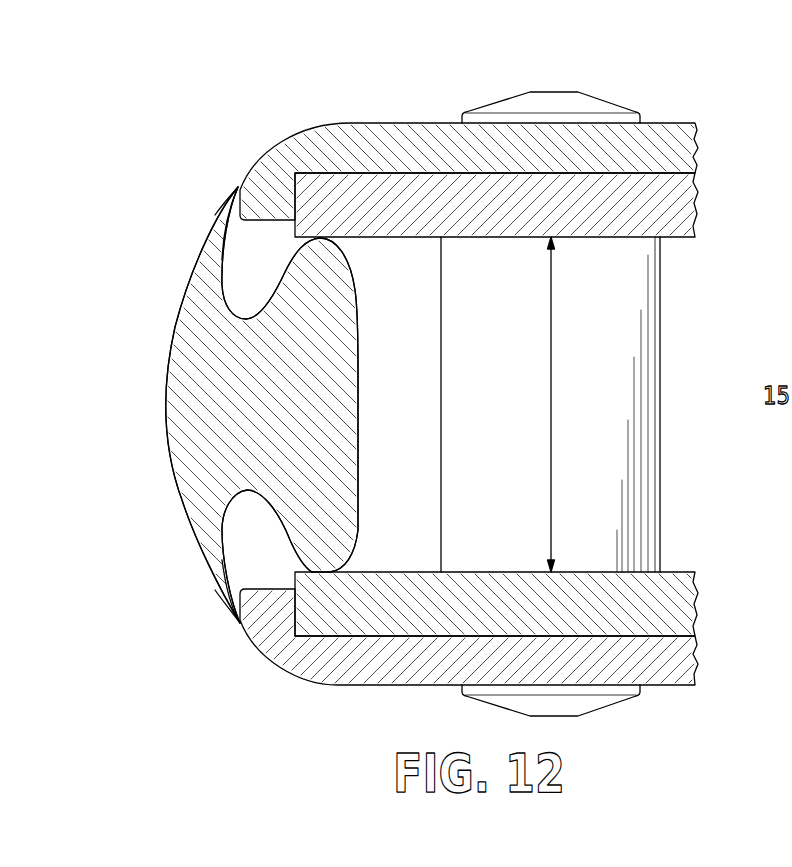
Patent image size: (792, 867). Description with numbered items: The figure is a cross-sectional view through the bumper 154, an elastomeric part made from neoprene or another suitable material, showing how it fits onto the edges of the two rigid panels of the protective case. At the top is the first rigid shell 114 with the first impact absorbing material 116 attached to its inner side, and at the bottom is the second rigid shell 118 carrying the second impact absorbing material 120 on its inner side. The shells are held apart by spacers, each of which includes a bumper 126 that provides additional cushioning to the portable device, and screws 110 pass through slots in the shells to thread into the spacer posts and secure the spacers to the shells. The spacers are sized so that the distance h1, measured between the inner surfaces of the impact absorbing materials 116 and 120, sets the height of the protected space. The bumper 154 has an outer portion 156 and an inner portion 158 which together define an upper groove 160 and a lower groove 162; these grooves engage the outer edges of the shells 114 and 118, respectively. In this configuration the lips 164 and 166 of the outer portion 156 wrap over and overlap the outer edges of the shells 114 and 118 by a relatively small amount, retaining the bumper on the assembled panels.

The screw 110 is at (552, 92).
The first rigid shell 114 is at (676, 123).
The first impact absorbing material 116 is at (674, 237).
The second rigid shell 118 is at (678, 686).
The second impact absorbing material 120 is at (678, 571).
The bumper 126 is at (663, 405).
The bumper 154 is at (175, 328).
The outer portion 156 is at (167, 397).
The inner portion 158 is at (359, 400).
The upper groove 160 is at (258, 277).
The lower groove 162 is at (243, 535).
The lip 164 is at (216, 207).
The lip 166 is at (224, 604).
The distance h1 is at (560, 403).